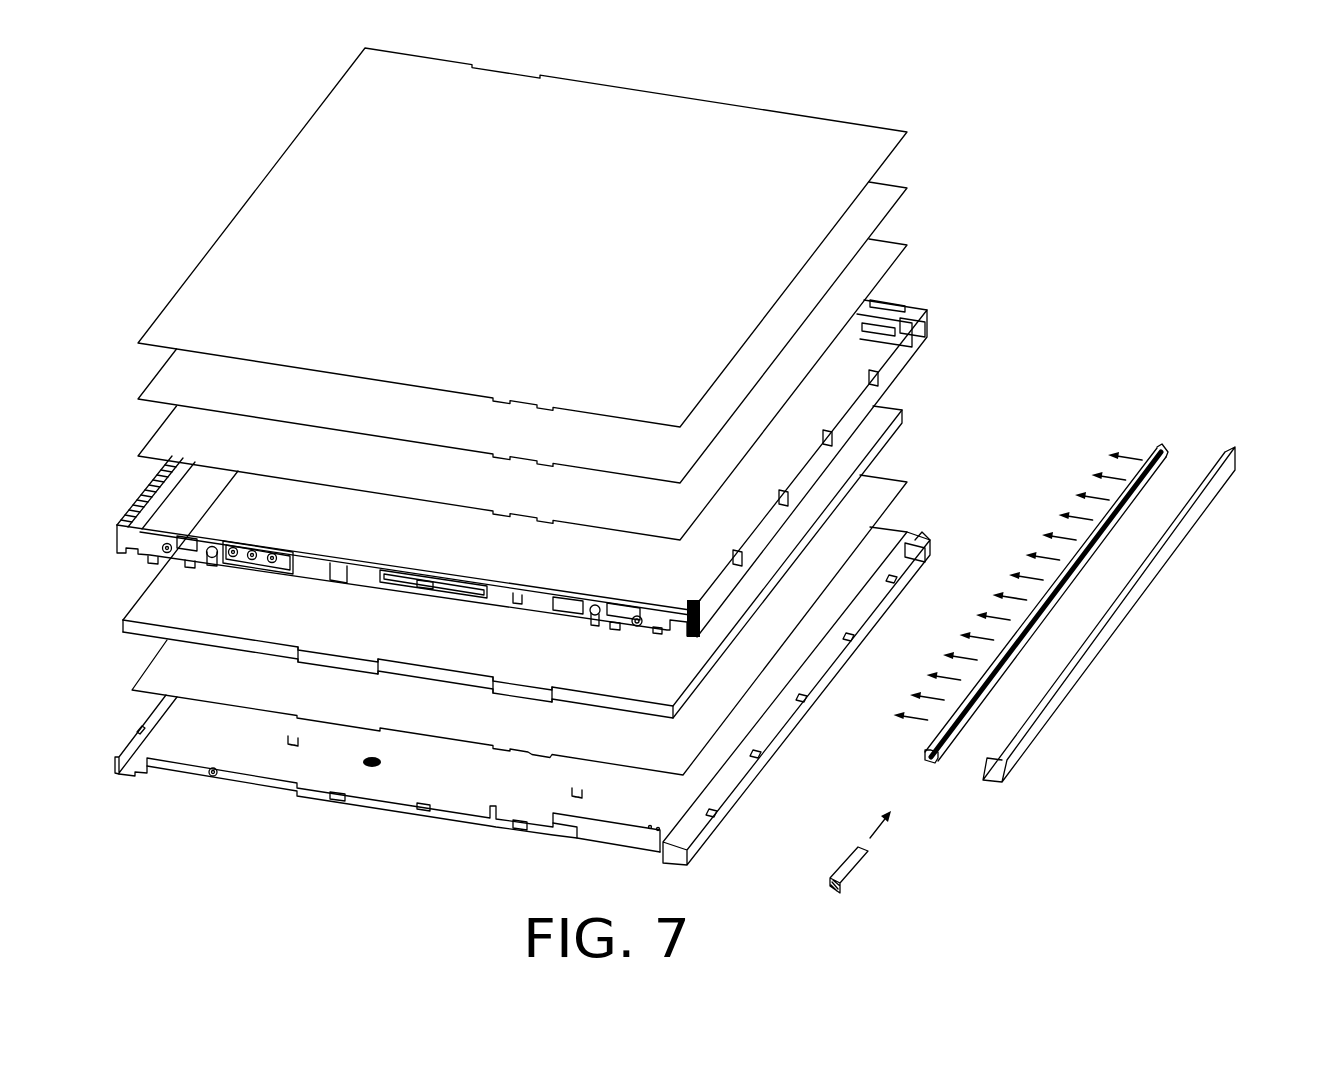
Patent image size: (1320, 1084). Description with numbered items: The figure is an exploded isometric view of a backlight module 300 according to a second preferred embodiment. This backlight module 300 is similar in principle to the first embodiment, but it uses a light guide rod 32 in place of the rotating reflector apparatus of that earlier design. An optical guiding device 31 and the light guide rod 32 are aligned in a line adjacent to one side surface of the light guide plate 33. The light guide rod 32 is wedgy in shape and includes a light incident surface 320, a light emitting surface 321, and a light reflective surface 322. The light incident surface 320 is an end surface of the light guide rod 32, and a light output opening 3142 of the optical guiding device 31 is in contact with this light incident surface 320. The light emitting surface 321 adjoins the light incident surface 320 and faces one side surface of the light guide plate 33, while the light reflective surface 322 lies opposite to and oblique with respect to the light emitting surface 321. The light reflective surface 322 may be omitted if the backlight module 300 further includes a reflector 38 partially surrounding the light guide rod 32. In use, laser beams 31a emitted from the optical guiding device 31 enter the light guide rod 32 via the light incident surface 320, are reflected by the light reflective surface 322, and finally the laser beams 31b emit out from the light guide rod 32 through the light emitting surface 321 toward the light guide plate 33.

The backlight module 300 is at (236, 163).
The light guide plate 33 is at (873, 427).
The optical guiding device 31 is at (847, 867).
The light output opening 3142 is at (862, 847).
The laser beams 31a is at (878, 830).
The laser beams 31b is at (920, 714).
The light guide rod 32 is at (1156, 455).
The light incident surface 320 is at (932, 763).
The light emitting surface 321 is at (1118, 488).
The light reflective surface 322 is at (1167, 450).
The reflector 38 is at (1180, 527).